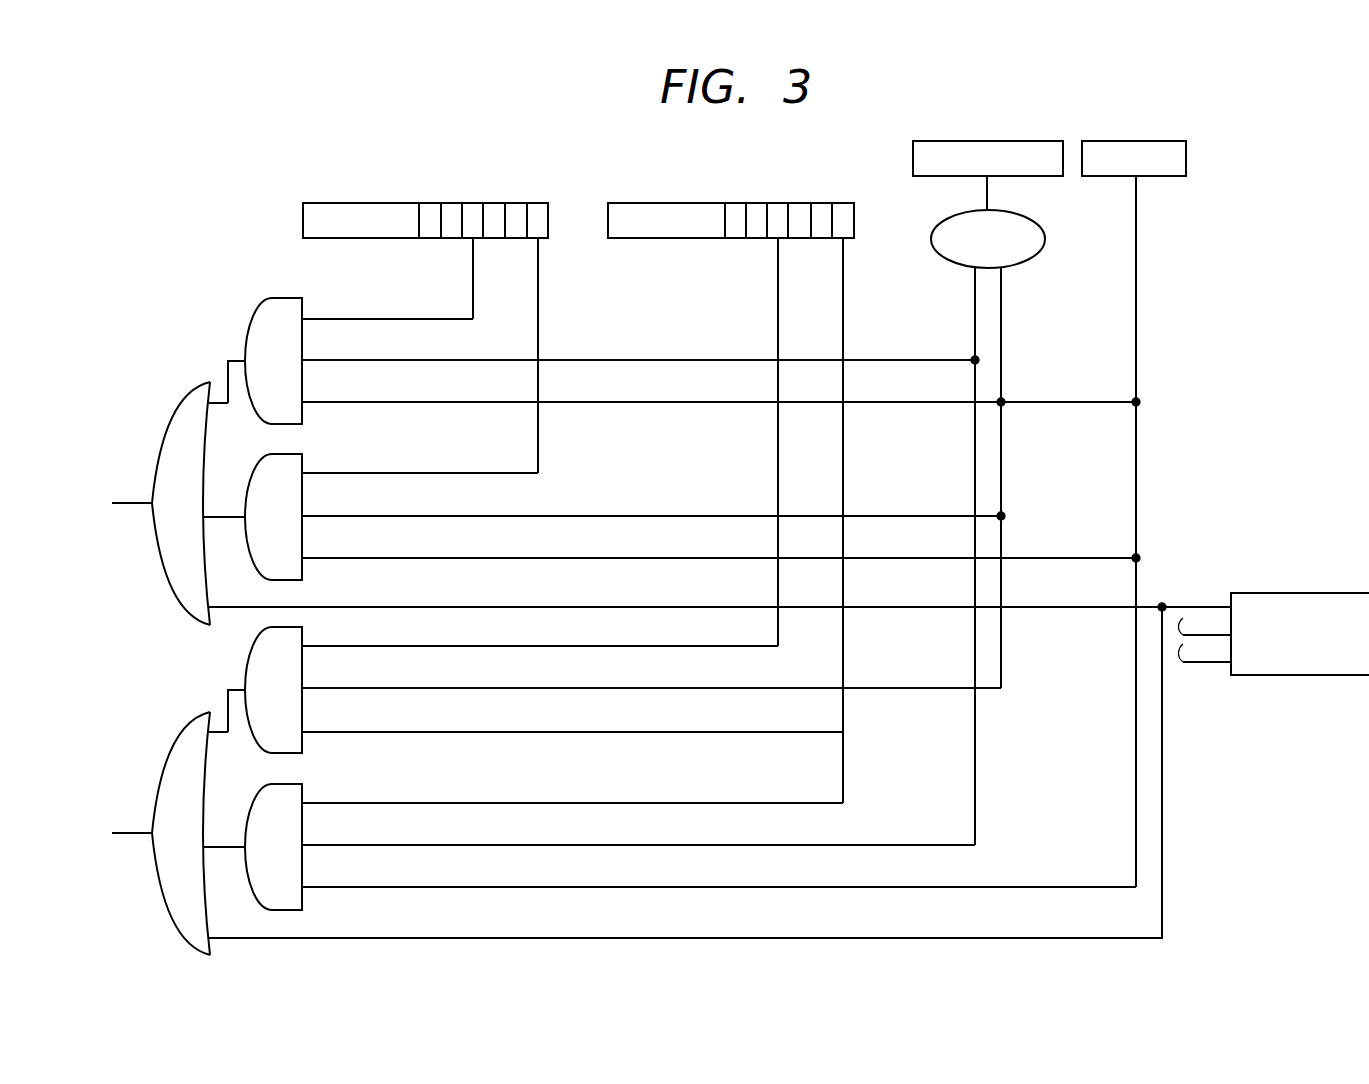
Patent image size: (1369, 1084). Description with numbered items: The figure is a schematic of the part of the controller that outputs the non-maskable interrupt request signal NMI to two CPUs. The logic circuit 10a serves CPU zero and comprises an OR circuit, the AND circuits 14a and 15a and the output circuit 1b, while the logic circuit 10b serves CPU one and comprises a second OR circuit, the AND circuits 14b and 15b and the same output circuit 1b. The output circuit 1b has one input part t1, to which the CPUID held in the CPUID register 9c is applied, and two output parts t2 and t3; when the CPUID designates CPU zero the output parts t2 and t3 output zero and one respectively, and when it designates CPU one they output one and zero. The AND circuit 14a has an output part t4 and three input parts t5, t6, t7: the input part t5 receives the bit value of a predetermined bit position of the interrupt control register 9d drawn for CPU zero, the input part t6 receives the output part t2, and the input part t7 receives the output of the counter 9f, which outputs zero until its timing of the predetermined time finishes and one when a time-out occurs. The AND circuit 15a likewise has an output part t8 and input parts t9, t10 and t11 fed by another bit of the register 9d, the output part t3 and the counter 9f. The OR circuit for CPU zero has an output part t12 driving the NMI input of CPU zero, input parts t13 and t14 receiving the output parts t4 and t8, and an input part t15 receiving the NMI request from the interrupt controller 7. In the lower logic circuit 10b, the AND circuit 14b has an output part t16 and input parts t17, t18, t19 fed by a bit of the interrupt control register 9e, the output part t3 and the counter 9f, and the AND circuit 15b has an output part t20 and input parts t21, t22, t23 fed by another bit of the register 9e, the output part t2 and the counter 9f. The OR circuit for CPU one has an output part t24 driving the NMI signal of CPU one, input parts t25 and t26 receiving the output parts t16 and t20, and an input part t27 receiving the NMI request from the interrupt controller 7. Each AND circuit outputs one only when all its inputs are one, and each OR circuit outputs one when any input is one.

The interrupt control register (CPU#0) 9d is at (445, 303).
The interrupt control register 9e is at (750, 468).
The CPUID register 9c is at (990, 140).
The counter 9f is at (1138, 140).
The output circuit 1b is at (993, 510).
The interrupt controller 7 is at (1300, 593).
The logic circuit 10a is at (172, 337).
The logic circuit 10b is at (185, 692).
The AND circuit 14a is at (256, 368).
The AND circuit 15a is at (256, 524).
The AND circuit 14b is at (256, 697).
The AND circuit 15b is at (256, 854).
The input part t1 is at (990, 200).
The output part t2 is at (973, 278).
The output part t3 is at (1003, 278).
The output part t4 is at (243, 358).
The input part t5 is at (303, 316).
The input part t6 is at (303, 357).
The input part t7 is at (303, 399).
The output part t8 is at (242, 522).
The input part t9 is at (303, 470).
The input part t10 is at (303, 513).
The input part t11 is at (303, 555).
The output part t12 is at (150, 506).
The input part t13 is at (212, 406).
The input part t14 is at (205, 513).
The input part t15 is at (210, 603).
The output part t16 is at (242, 688).
The input part t17 is at (303, 643).
The input part t18 is at (303, 685).
The input part t19 is at (303, 729).
The output part t20 is at (242, 853).
The input part t21 is at (303, 800).
The input part t22 is at (303, 842).
The input part t23 is at (303, 884).
The output part t24 is at (150, 836).
The input part t25 is at (211, 735).
The input part t26 is at (205, 843).
The input part t27 is at (210, 933).